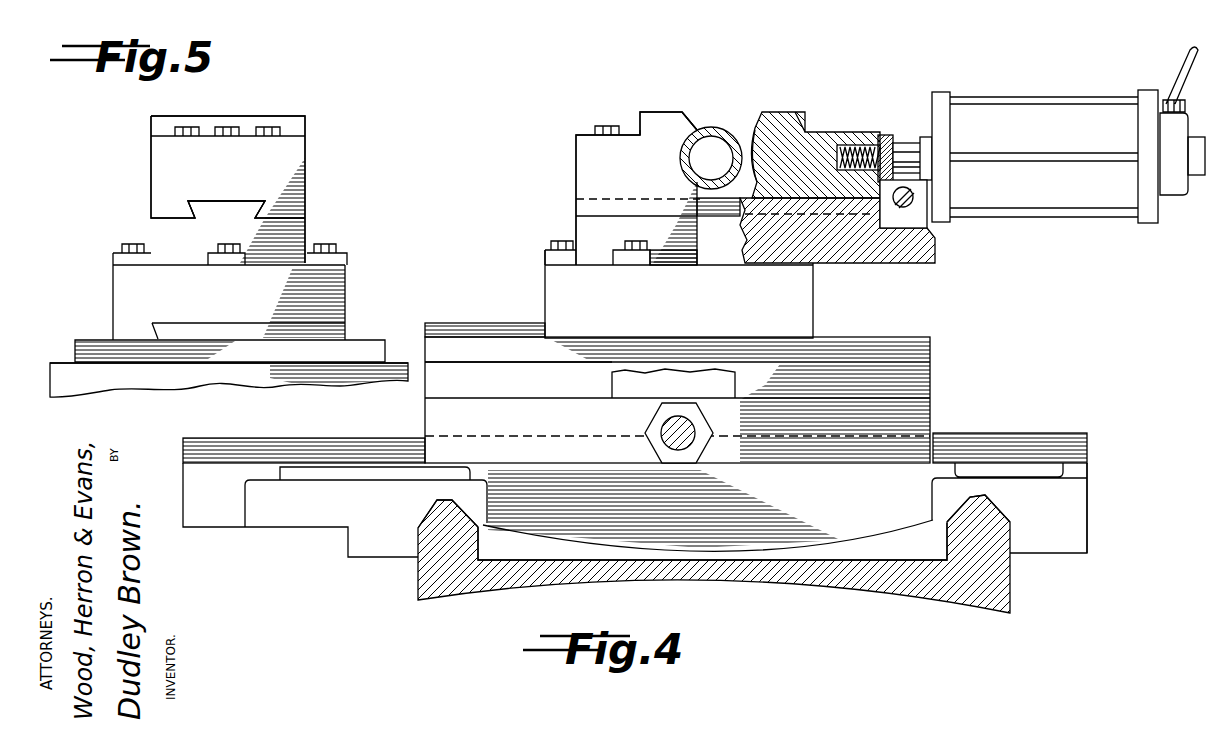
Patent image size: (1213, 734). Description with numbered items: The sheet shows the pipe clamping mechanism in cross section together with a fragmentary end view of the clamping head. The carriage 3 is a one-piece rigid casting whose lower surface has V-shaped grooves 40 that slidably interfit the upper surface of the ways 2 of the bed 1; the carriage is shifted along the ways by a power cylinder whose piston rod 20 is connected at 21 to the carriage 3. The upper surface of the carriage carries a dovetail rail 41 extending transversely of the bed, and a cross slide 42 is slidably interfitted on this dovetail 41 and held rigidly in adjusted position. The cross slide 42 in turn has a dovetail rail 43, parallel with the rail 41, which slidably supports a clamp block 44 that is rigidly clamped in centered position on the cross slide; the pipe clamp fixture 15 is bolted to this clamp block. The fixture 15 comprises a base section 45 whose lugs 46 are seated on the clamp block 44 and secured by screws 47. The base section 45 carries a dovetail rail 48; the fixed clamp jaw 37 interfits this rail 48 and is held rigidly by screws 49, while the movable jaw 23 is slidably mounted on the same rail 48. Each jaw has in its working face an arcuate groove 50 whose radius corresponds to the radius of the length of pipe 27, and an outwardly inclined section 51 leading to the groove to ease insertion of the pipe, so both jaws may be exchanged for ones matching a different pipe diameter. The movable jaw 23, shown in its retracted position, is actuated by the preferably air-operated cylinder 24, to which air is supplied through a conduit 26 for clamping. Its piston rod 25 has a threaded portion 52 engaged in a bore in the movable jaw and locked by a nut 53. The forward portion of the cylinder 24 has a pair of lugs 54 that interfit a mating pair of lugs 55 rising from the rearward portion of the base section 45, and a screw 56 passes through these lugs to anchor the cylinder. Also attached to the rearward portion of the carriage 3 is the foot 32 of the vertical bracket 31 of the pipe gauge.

In FIG. 4, the bed 1 is at (425, 597).
In FIG. 4, the ways 2 is at (437, 533).
In FIG. 5, the carriage 3 is at (118, 377).
In FIG. 4, the carriage 3 is at (1096, 502).
In FIG. 5, the pipe clamp fixture 15 is at (312, 160).
In FIG. 4, the pipe clamp fixture 15 is at (568, 131).
In FIG. 4, the piston rod 20 is at (688, 445).
In FIG. 4, the connection 21 is at (662, 440).
In FIG. 4, the movable jaw 23 is at (783, 112).
In FIG. 4, the cylinder 24 is at (1037, 120).
In FIG. 4, the piston rod 25 is at (905, 150).
In FIG. 4, the conduit 26 is at (1180, 75).
In FIG. 4, the length of pipe 27 is at (712, 128).
In FIG. 4, the vertical bracket 31 is at (648, 370).
In FIG. 4, the cross piece or foot 32 is at (512, 418).
In FIG. 5, the fixed clamp jaw 37 is at (287, 148).
In FIG. 4, the fixed clamp jaw 37 is at (660, 113).
In FIG. 4, the V-shaped grooves 40 is at (430, 505).
In FIG. 4, the dovetail rail 41 is at (362, 437).
In FIG. 5, the cross slide 42 is at (202, 372).
In FIG. 4, the cross slide 42 is at (932, 365).
In FIG. 5, the dovetail rail 43 is at (292, 332).
In FIG. 4, the dovetail rail 43 is at (488, 325).
In FIG. 5, the clamp block 44 is at (125, 303).
In FIG. 4, the clamp block 44 is at (815, 296).
In FIG. 5, the base section 45 is at (290, 235).
In FIG. 4, the base section 45 is at (590, 222).
In FIG. 5, the lugs 46 is at (120, 261).
In FIG. 4, the lugs 46 is at (552, 262).
In FIG. 5, the screws 47 is at (136, 243).
In FIG. 4, the screws 47 is at (553, 242).
In FIG. 5, the dovetail rail 48 is at (197, 201).
In FIG. 4, the dovetail rail 48 is at (697, 190).
In FIG. 5, the screws 49 is at (268, 126).
In FIG. 4, the screws 49 is at (607, 125).
In FIG. 4, the arcuate groove 50 is at (677, 148).
In FIG. 4, the outwardly inclined section 51 is at (692, 120).
In FIG. 4, the threaded portion 52 is at (848, 145).
In FIG. 4, the nut 53 is at (882, 135).
In FIG. 4, the lugs 54 is at (926, 137).
In FIG. 4, the lugs 55 is at (935, 240).
In FIG. 4, the screw 56 is at (912, 196).